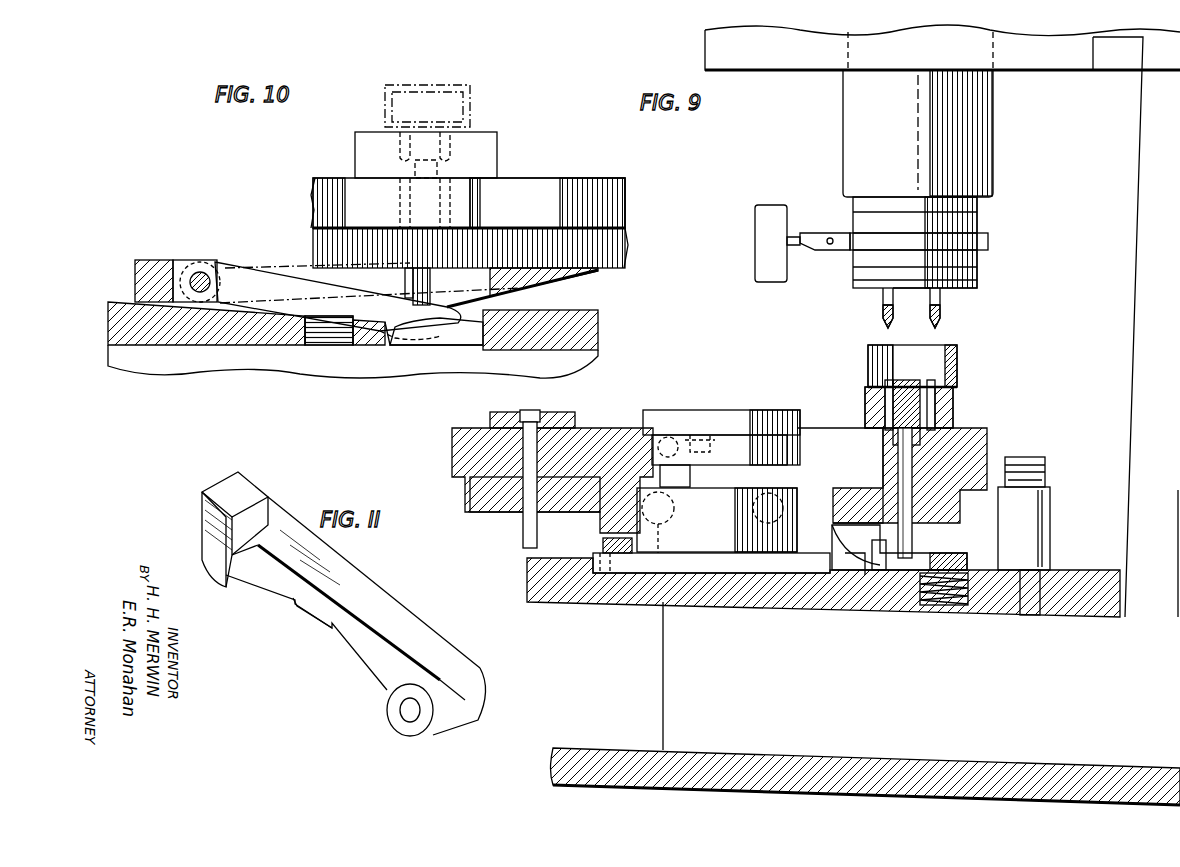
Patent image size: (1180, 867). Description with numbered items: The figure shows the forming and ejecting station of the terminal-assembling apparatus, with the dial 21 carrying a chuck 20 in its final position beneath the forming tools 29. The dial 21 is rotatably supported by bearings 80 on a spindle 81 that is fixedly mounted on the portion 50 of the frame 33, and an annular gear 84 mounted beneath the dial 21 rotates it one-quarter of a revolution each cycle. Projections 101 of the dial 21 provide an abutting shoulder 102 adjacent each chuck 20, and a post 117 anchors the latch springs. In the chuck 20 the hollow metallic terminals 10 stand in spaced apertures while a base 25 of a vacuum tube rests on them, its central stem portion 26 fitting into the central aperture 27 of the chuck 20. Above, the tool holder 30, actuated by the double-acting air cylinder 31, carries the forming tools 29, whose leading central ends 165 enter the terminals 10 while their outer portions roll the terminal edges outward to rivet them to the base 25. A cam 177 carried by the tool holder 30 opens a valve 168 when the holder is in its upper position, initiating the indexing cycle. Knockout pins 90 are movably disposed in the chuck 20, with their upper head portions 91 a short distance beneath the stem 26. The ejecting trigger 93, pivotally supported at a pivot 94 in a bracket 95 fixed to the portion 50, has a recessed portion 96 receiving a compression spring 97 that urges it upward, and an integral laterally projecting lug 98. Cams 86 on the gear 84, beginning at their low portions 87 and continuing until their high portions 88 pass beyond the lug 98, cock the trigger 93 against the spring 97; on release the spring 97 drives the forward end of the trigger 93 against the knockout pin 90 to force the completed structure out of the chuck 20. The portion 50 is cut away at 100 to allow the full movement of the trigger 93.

In FIG. 9, the hollow metallic terminals 10 is at (870, 400).
In FIG. 10, the chuck 20 is at (490, 155).
In FIG. 9, the chuck 20 is at (954, 420).
In FIG. 10, the dial 21 is at (336, 178).
In FIG. 9, the dial 21 is at (600, 428).
In FIG. 10, the base 25 is at (470, 110).
In FIG. 9, the base 25 is at (958, 365).
In FIG. 9, the central stem portion 26 is at (918, 395).
In FIG. 9, the central aperture 27 is at (952, 432).
In FIG. 9, the forming tools 29 is at (881, 314).
In FIG. 9, the tool holder 30 is at (980, 273).
In FIG. 9, the double-acting air cylinder 31 is at (975, 170).
In FIG. 10, the frame 33 is at (483, 335).
In FIG. 9, the frame 33 is at (1136, 426).
In FIG. 10, the portion of the frame 50 is at (124, 302).
In FIG. 9, the bearings 80 is at (668, 410).
In FIG. 9, the spindle 81 is at (692, 478).
In FIG. 10, the annular gear 84 is at (622, 250).
In FIG. 9, the annular gear 84 is at (498, 507).
In FIG. 10, the cams 86 is at (486, 289).
In FIG. 9, the cams 86 is at (850, 575).
In FIG. 10, the low portions 87 is at (598, 273).
In FIG. 9, the high portions 88 is at (875, 575).
In FIG. 10, the knockout pins 90 is at (413, 285).
In FIG. 9, the knockout pins 90 is at (538, 530).
In FIG. 9, the upper head portions 91 is at (895, 435).
In FIG. 10, the ejecting trigger 93 is at (236, 272).
In FIG. 9, the ejecting trigger 93 is at (950, 553).
In FIG. 11, the ejecting trigger 93 is at (385, 598).
In FIG. 10, the pivot 94 is at (203, 272).
In FIG. 10, the bracket 95 is at (166, 262).
In FIG. 10, the recessed portion 96 is at (325, 316).
In FIG. 11, the recessed portion 96 is at (310, 614).
In FIG. 10, the compression spring 97 is at (325, 340).
In FIG. 9, the compression spring 97 is at (934, 605).
In FIG. 11, the laterally projecting lug 98 is at (205, 535).
In FIG. 10, the cut away 100 is at (398, 345).
In FIG. 10, the projections 101 is at (530, 190).
In FIG. 10, the abutting shoulder 102 is at (479, 197).
In FIG. 9, the post 117 is at (1048, 484).
In FIG. 9, the leading central ends 165 is at (890, 325).
In FIG. 9, the valve 168 is at (777, 278).
In FIG. 9, the cam 177 is at (808, 233).